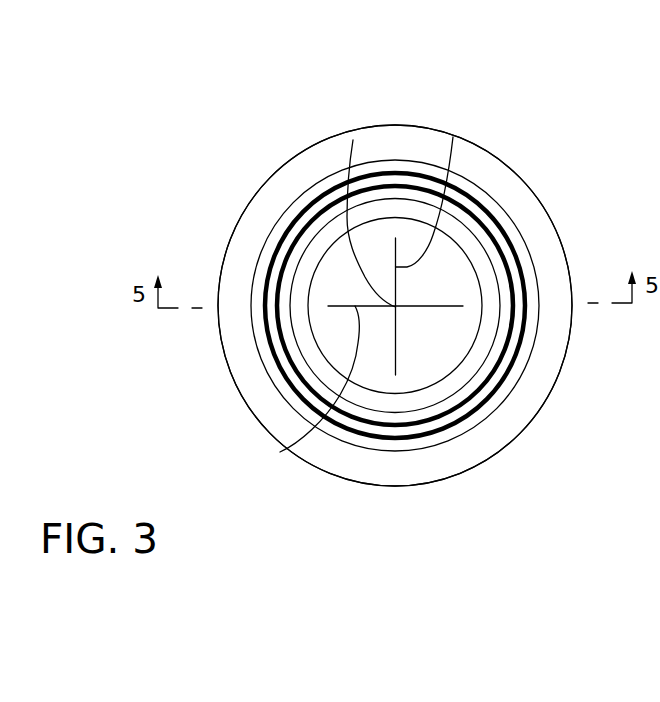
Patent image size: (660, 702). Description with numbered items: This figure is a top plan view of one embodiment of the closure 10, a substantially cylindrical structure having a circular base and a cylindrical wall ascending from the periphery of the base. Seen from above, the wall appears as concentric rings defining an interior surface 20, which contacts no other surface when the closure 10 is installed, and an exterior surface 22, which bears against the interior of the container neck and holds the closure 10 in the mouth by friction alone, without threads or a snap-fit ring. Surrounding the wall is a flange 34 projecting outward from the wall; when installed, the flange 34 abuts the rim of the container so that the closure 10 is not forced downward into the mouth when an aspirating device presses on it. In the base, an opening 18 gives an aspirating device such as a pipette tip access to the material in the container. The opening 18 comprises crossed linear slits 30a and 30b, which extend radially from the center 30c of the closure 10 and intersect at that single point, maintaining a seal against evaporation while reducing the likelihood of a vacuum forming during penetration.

The closure 10 is at (542, 130).
The opening 18 is at (440, 347).
The interior surface 20 is at (287, 242).
The exterior surface 22 is at (228, 250).
The slit 30a is at (453, 137).
The slit 30b is at (280, 452).
The center 30c is at (353, 140).
The flange 34 is at (540, 378).